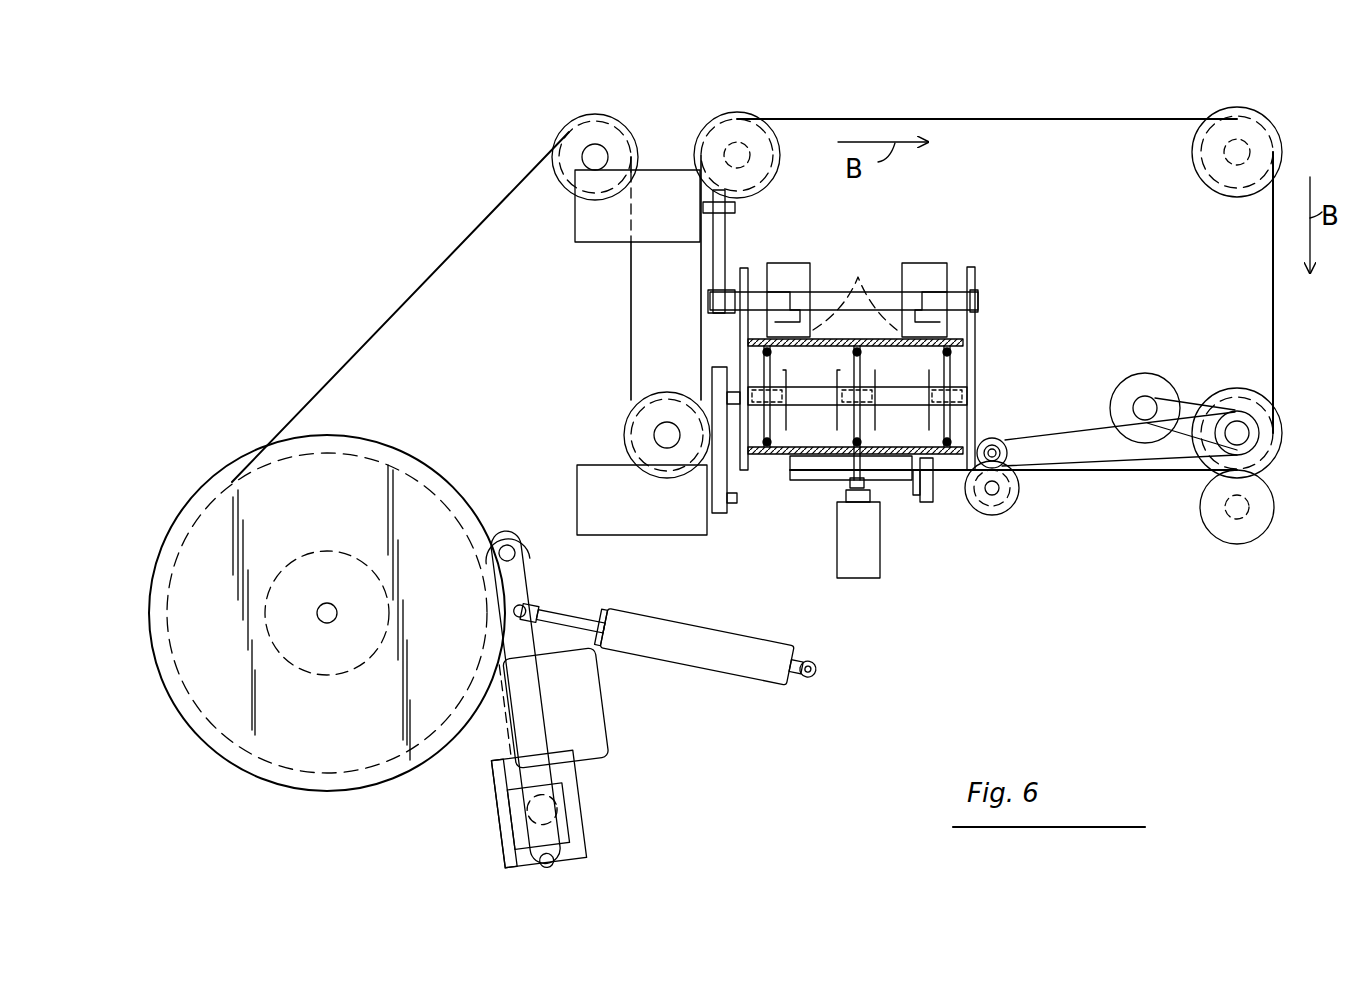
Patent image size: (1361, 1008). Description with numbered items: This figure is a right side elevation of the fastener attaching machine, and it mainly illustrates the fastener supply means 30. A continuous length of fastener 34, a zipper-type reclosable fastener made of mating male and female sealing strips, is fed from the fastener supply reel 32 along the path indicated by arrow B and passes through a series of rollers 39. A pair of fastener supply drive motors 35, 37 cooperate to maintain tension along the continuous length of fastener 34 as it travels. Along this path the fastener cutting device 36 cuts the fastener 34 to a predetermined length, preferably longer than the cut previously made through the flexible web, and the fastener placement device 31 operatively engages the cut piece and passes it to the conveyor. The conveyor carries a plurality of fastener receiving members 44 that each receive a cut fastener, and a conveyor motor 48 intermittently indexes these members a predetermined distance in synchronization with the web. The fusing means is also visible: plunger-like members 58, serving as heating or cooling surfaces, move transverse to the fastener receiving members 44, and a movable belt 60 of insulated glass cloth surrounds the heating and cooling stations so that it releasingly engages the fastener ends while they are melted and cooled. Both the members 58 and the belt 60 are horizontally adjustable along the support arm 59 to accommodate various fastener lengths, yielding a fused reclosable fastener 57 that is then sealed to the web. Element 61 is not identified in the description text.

The fastener supply means 30 is at (590, 792).
The fastener placement device 31 is at (837, 548).
The fastener supply reel 32 is at (305, 792).
The continuous length of fastener 34 is at (418, 298).
The fastener supply drive motor 35 is at (603, 702).
The fastener cutting device 36 is at (930, 505).
The fastener supply drive motor 37 is at (1125, 382).
The rollers 39 is at (583, 118).
The fastener receiving members 44 is at (795, 470).
The conveyor motor 48 is at (580, 475).
The fused reclosable fastener 57 is at (868, 400).
The plunger-like members 58 is at (855, 285).
The support arm 59 is at (770, 272).
The movable belt 60 is at (790, 262).
The mounting block 61 is at (592, 247).